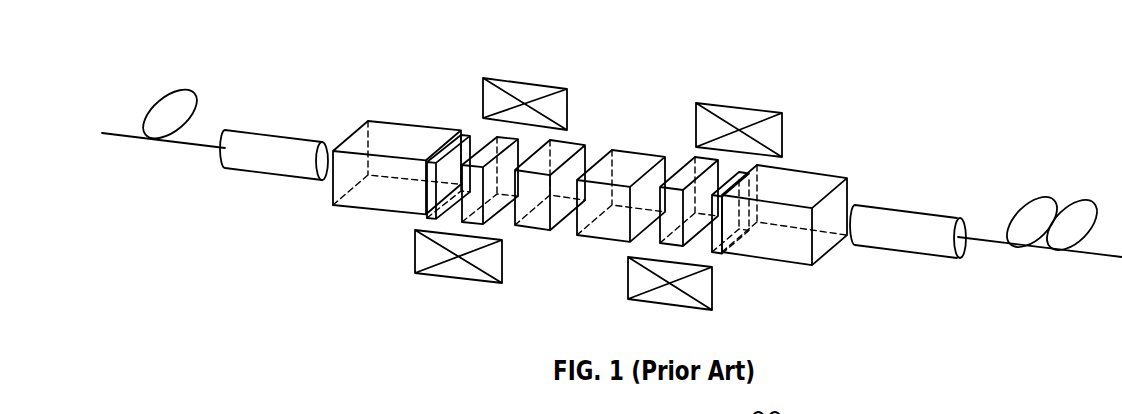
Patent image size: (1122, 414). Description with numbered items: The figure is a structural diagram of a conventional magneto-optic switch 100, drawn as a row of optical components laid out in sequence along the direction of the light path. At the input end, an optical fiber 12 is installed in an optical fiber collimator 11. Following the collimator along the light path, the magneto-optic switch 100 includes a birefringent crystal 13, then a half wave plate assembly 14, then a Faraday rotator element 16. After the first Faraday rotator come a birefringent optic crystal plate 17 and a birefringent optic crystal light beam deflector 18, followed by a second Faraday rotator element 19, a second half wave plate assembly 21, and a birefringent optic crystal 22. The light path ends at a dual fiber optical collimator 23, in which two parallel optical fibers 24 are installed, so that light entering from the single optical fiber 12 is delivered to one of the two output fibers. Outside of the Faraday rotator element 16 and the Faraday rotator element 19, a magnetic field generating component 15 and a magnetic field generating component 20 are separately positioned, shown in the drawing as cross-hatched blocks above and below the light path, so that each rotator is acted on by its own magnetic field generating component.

The magneto-optic switch 100 is at (248, 39).
The optical fiber collimator 11 is at (273, 177).
The optical fiber 12 is at (192, 150).
The birefringent crystal 13 is at (400, 130).
The half wave plate assembly 14 is at (428, 207).
The magnetic field generating component 15 is at (532, 92).
The Faraday rotator element 16 is at (492, 152).
The birefringent optic crystal plate 17 is at (566, 148).
The birefringent optic crystal light beam deflector 18 is at (627, 160).
The Faraday rotator element 19 is at (658, 232).
The magnetic field generating component 20 is at (735, 113).
The half wave plate assembly 21 is at (750, 166).
The birefringent optic crystal 22 is at (827, 183).
The dual fiber optical collimator 23 is at (908, 253).
The parallel optical fibers 24 is at (1028, 248).